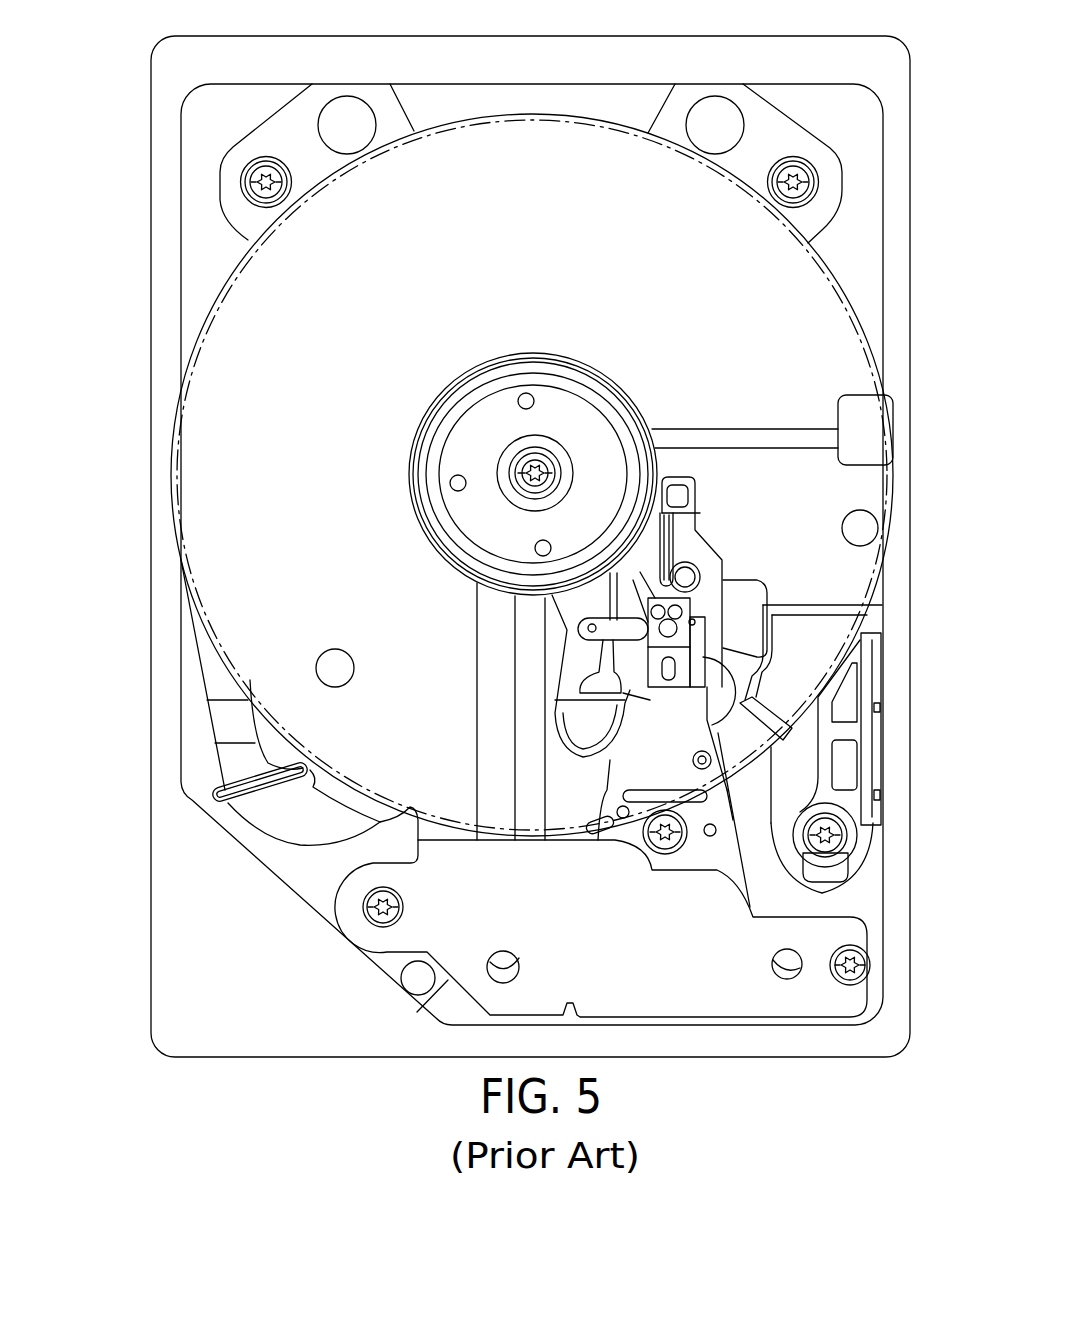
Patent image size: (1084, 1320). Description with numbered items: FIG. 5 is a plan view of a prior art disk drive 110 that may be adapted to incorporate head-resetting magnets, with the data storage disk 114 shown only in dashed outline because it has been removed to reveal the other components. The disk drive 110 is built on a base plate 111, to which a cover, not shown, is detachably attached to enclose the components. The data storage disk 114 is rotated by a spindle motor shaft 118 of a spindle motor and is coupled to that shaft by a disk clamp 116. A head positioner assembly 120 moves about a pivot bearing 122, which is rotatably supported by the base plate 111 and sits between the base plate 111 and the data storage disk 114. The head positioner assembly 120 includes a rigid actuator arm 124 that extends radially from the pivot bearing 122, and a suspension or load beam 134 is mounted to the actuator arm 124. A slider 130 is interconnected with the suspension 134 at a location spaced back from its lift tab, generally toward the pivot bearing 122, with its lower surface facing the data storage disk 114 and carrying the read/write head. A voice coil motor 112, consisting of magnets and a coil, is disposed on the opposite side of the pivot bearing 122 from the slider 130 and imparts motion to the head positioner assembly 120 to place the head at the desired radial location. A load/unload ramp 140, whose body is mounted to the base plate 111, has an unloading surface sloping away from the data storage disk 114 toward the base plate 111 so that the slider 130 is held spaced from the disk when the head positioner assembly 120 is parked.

The disk drive 110 is at (405, 1093).
The base plate 111 is at (276, 1040).
The voice coil motor 112 is at (575, 940).
The data storage disk 114 is at (213, 640).
The disk clamp 116 is at (600, 430).
The spindle motor shaft 118 is at (515, 462).
The head positioner assembly 120 is at (573, 698).
The pivot bearing 122 is at (665, 855).
The actuator arm 124 is at (687, 647).
The slider 130 is at (692, 487).
The suspension 134 is at (692, 562).
The load/unload ramp 140 is at (668, 495).